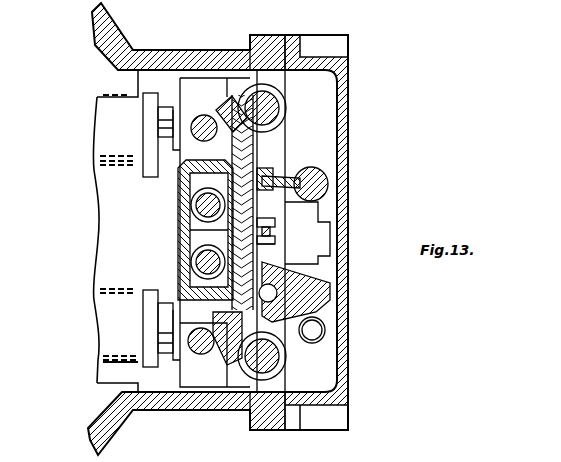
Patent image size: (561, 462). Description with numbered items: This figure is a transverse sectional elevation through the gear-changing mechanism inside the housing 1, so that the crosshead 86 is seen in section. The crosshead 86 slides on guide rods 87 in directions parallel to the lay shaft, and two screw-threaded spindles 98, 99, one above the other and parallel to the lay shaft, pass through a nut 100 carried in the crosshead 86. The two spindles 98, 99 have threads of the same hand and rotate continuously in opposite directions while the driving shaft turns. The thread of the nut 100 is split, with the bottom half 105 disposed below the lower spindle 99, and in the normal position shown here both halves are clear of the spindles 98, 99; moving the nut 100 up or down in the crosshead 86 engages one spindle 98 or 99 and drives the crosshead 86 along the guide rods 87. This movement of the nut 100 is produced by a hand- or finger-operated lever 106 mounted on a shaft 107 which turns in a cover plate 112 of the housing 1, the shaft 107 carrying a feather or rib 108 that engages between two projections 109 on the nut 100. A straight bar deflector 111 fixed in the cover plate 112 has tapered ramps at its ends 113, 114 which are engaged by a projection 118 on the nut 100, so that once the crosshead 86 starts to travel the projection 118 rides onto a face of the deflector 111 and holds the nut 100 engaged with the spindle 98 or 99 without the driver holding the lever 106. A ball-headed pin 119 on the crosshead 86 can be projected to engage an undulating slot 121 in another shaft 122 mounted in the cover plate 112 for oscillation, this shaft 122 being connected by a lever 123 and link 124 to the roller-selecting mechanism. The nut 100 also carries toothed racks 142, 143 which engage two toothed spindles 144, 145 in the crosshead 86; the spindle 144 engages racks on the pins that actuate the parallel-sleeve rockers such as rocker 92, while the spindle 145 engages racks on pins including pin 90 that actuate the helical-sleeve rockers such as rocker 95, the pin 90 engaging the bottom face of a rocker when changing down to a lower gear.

The housing 1 is at (170, 57).
The crosshead 86 is at (217, 373).
The guide rods 87 is at (275, 108).
The pin 90 is at (188, 338).
The rocker 92 is at (145, 138).
The rocker 95 is at (150, 346).
The screw-threaded spindle 98 is at (196, 208).
The screw-threaded spindle 99 is at (196, 262).
The nut 100 is at (190, 232).
The bottom half of the thread 105 is at (160, 300).
The hand- or finger-operated lever 106 is at (178, 196).
The shaft 107 is at (325, 192).
The feather or rib 108 is at (327, 178).
The projections 109 is at (250, 161).
The straight bar deflector 111 is at (330, 240).
The cover plate 112 is at (300, 302).
The left-hand end of the deflector 113 is at (277, 230).
The right-hand end of the deflector 114 is at (268, 244).
The projection 118 is at (265, 193).
The ball-headed pin 119 is at (318, 336).
The undulating slot 121 is at (331, 285).
The shaft 122 is at (325, 323).
The lever 123 is at (322, 348).
The link 124 is at (290, 337).
The toothed rack 142 is at (236, 102).
The toothed rack 143 is at (206, 344).
The toothed spindle 144 is at (200, 116).
The toothed spindle 145 is at (180, 366).